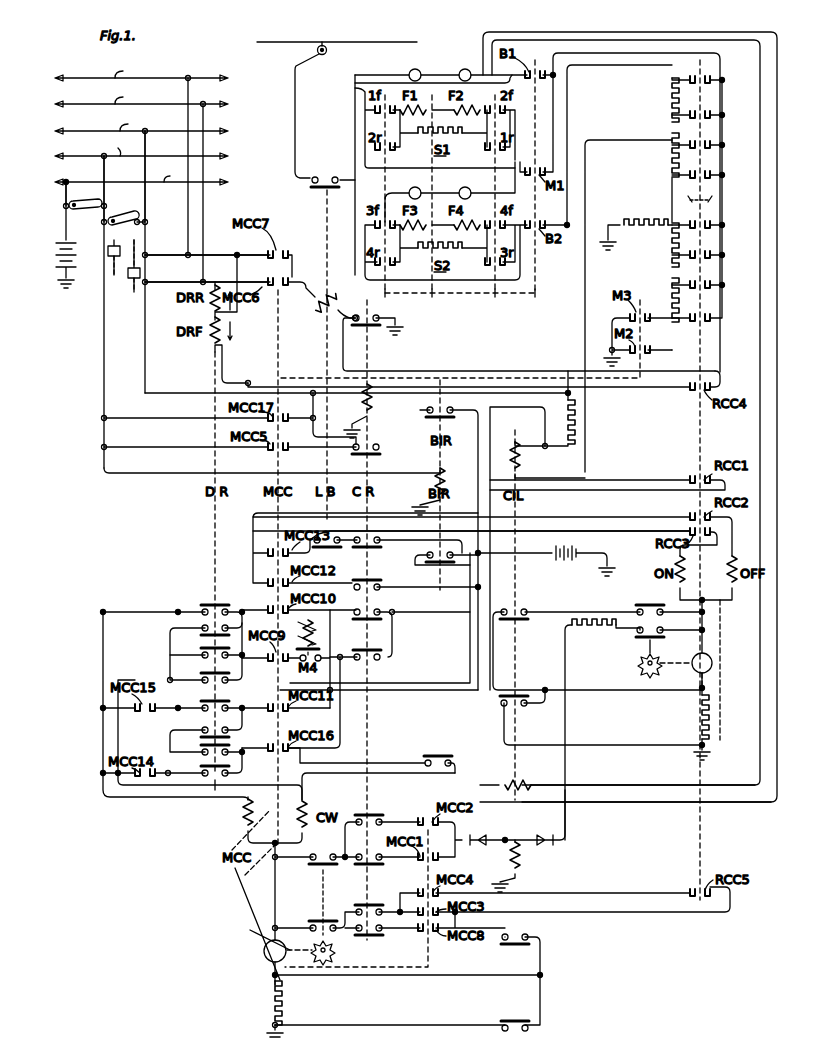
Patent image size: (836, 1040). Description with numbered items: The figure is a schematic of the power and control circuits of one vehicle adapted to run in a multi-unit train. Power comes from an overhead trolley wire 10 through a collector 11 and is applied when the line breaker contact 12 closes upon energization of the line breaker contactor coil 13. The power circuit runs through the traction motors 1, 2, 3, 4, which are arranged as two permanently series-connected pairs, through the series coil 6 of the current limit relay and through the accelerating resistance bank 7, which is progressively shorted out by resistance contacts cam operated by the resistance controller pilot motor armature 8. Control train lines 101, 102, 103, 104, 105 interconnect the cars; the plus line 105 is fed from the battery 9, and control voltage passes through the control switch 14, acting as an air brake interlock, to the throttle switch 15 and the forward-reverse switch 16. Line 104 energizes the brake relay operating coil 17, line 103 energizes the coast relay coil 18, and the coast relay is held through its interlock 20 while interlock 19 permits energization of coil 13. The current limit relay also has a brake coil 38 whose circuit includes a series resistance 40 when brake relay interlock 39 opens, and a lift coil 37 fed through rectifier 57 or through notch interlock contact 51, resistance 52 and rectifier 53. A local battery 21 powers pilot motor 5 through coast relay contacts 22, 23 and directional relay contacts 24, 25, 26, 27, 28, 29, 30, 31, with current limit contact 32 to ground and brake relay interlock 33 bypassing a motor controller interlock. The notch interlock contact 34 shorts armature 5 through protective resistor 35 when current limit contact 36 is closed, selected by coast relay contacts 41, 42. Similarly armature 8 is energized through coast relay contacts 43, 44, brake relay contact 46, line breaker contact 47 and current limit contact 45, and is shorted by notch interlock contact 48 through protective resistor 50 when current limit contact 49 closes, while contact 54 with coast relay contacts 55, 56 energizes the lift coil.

The train line wire 101 is at (128, 73).
The train line wire 102 is at (128, 99).
The train line wire 103 is at (128, 126).
The train line wire 104 is at (128, 150).
The plus line 105 is at (128, 178).
The battery 9 is at (59, 262).
The control switch 14 is at (78, 210).
The throttle switch 15 is at (116, 212).
The forward-reverse switch 16 is at (126, 302).
The overhead trolley wire 10 is at (266, 45).
The collector 11 is at (321, 56).
The line breaker contact 12 is at (321, 187).
The LB contactor coil 13 is at (314, 302).
The interlock 19 is at (366, 316).
The coil of coast relay 18 is at (380, 400).
The interlock 20 is at (380, 457).
The operating coil of brake relay 17 is at (448, 482).
The BR interlock 39 is at (450, 414).
The brake coil 38 is at (505, 442).
The series resistance 40 is at (580, 412).
The accelerating resistance bank 7 is at (660, 132).
The traction motor 1 is at (407, 75).
The traction motor 2 is at (493, 75).
The traction motor 3 is at (422, 204).
The traction motor 4 is at (487, 181).
The local battery 21 is at (560, 562).
The NI contact 48 is at (636, 606).
The NI contact 51 is at (640, 642).
The RCC pilot motor armature 8 is at (718, 662).
The protective resistor 50 is at (692, 718).
The resistance 52 is at (591, 640).
The CL contact 49 is at (522, 620).
The CL contact 45 is at (522, 710).
The series coil 6 is at (492, 785).
The LB contact 47 is at (337, 548).
The COR contact 44 is at (380, 548).
The BR contact 46 is at (434, 554).
The COR contact 43 is at (358, 587).
The normally open contact of COR 22 is at (380, 612).
The normally closed contact of COR 23 is at (378, 657).
The DR contact 24 is at (205, 606).
The directional relay contact 29 is at (203, 635).
The directional relay contact 28 is at (228, 646).
The DR contact 25 is at (200, 672).
The DR interlock 26 is at (203, 696).
The directional relay contact 30 is at (226, 730).
The directional relay contact 31 is at (205, 752).
The DR contact 27 is at (215, 797).
The BR interlock 33 is at (446, 750).
The contact 54 is at (308, 868).
The COR contact 55 is at (362, 868).
The COR contact 56 is at (375, 814).
The NI contact 34 is at (310, 922).
The COR contact 42 is at (378, 904).
The COR contact 41 is at (365, 940).
The rectifier 57 is at (477, 836).
The rectifier 53 is at (542, 834).
The lift coil 37 is at (524, 864).
The CL contact 36 is at (502, 944).
The CL contact 32 is at (506, 1018).
The pilot motor 5 is at (260, 956).
The protective resistor 35 is at (268, 1002).